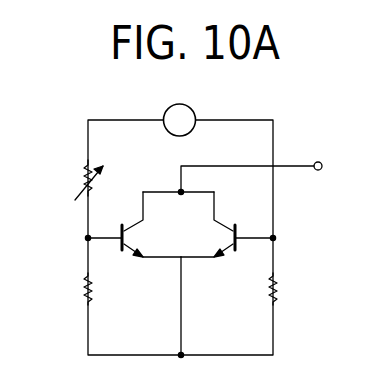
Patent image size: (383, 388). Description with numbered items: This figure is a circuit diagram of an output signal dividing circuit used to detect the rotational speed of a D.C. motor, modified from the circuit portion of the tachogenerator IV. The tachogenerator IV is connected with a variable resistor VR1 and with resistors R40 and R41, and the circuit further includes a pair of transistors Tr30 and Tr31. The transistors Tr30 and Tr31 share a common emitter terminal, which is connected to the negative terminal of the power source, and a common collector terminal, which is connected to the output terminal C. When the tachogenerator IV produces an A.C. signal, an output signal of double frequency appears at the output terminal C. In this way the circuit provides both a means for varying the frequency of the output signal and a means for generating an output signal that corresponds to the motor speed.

The tachogenerator IV is at (190, 106).
The output terminal C is at (323, 160).
The variable resistor VR1 is at (76, 165).
The resistor R40 is at (67, 289).
The resistor R41 is at (291, 289).
The transistor Tr30 is at (130, 235).
The transistor Tr31 is at (230, 239).